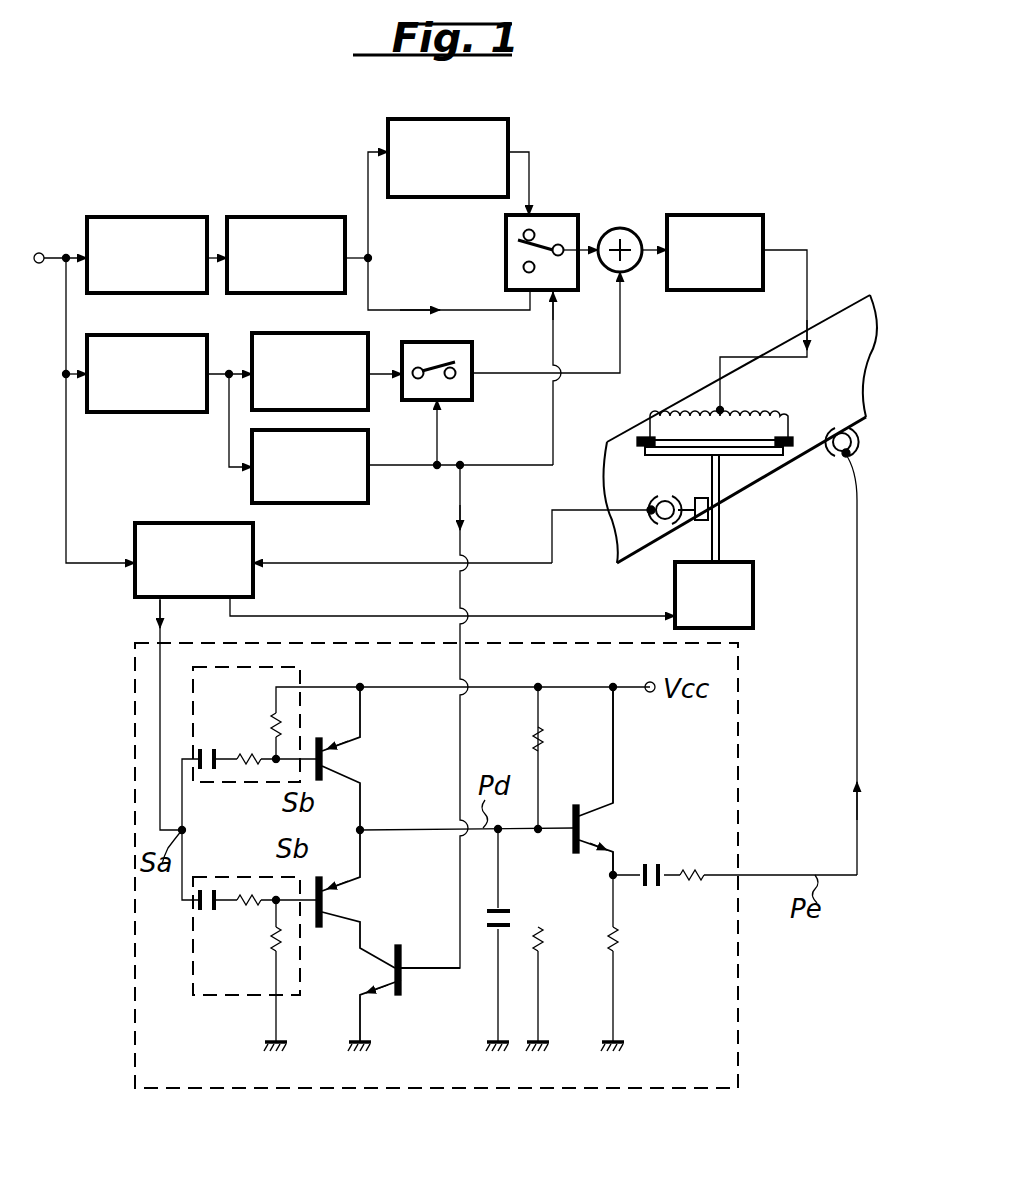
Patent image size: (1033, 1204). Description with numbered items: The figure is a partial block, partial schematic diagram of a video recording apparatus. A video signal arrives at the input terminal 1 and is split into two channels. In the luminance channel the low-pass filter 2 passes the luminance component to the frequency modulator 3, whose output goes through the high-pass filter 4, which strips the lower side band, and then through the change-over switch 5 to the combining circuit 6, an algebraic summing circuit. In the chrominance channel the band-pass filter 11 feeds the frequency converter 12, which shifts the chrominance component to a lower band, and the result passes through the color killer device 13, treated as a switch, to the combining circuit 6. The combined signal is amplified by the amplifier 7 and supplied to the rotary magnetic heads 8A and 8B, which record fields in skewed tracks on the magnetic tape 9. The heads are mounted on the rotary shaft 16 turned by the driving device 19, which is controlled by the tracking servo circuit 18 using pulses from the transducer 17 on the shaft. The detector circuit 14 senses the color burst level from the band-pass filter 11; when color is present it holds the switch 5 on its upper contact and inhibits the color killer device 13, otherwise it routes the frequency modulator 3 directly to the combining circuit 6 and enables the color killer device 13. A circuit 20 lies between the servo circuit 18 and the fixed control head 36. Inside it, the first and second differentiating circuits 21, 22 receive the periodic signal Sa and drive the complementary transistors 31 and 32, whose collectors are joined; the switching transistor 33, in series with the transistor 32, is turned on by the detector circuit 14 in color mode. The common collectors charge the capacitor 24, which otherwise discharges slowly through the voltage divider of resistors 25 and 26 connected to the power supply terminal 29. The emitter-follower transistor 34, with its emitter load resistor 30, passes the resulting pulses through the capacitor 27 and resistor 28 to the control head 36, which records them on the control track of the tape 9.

The input terminal 1 is at (40, 254).
The low-pass filter 2 is at (153, 216).
The frequency modulator 3 is at (290, 217).
The high-pass filter 4 is at (490, 118).
The change-over switch 5 is at (562, 214).
The combining circuit 6 is at (624, 226).
The amplifier 7 is at (712, 214).
The rotary magnetic head 8A is at (640, 440).
The rotary magnetic head 8B is at (790, 435).
The magnetic tape 9 is at (844, 320).
The band-pass filter 11 is at (146, 333).
The frequency converter 12 is at (284, 333).
The color killer device 13 is at (464, 345).
The detector circuit 14 is at (370, 462).
The rotary shaft 16 is at (720, 529).
The transducer 17 is at (686, 514).
The tracking servo circuit 18 is at (178, 522).
The driving device 19 is at (753, 600).
The circuit 20 is at (740, 740).
The first differentiating circuit 21 is at (300, 667).
The second differentiating circuit 22 is at (242, 878).
The capacitor 24 is at (506, 906).
The resistor 25 is at (544, 750).
The resistor 26 is at (542, 948).
The capacitor 27 is at (656, 888).
The resistor 28 is at (706, 890).
The power supply terminal 29 is at (652, 694).
The emitter load resistor 30 is at (620, 950).
The transistor 31 is at (330, 758).
The transistor 32 is at (332, 898).
The switching transistor 33 is at (390, 967).
The emitter-follower transistor 34 is at (580, 828).
The fixed head 36 is at (838, 456).